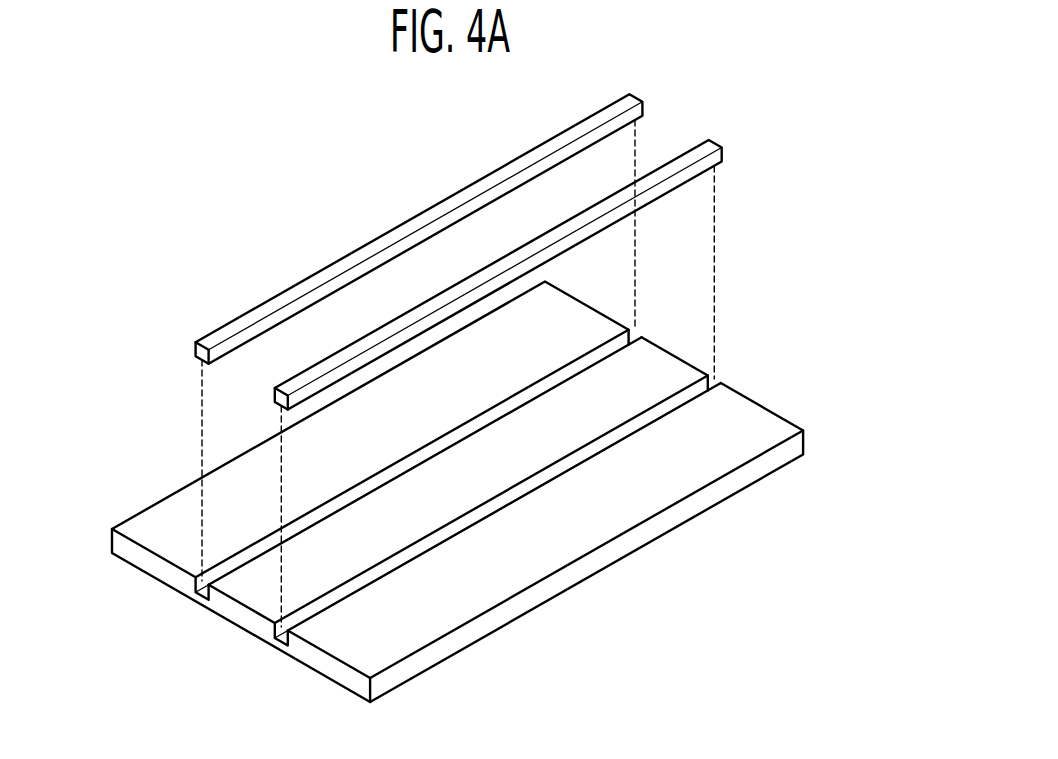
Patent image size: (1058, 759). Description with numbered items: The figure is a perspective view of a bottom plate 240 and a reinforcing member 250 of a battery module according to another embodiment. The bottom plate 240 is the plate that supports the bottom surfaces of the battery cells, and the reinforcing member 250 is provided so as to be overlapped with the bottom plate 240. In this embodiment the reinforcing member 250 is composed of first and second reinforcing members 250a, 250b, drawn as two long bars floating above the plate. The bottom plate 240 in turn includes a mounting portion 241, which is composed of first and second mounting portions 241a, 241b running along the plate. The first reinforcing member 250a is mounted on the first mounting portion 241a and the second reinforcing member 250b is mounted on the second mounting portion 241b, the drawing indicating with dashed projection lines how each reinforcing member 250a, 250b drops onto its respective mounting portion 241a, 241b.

The bottom plate 240 is at (421, 492).
The mounting portion 241 is at (380, 484).
The first mounting portion 241a is at (276, 538).
The second mounting portion 241b is at (308, 606).
The reinforcing member 250 is at (459, 360).
The first reinforcing member 250a is at (430, 196).
The second reinforcing member 250b is at (459, 268).